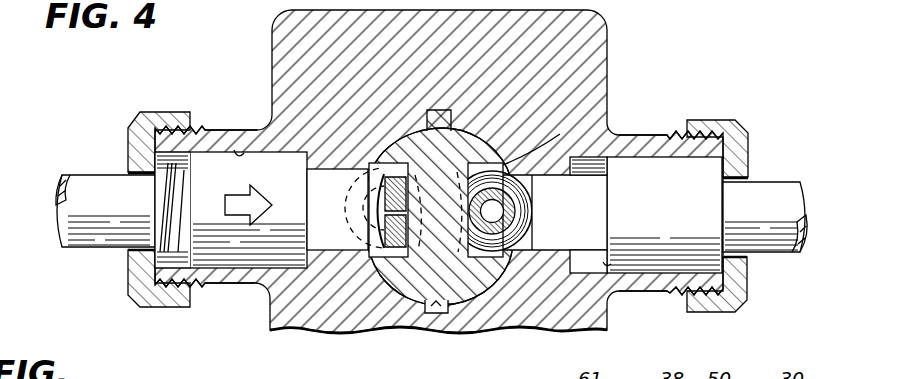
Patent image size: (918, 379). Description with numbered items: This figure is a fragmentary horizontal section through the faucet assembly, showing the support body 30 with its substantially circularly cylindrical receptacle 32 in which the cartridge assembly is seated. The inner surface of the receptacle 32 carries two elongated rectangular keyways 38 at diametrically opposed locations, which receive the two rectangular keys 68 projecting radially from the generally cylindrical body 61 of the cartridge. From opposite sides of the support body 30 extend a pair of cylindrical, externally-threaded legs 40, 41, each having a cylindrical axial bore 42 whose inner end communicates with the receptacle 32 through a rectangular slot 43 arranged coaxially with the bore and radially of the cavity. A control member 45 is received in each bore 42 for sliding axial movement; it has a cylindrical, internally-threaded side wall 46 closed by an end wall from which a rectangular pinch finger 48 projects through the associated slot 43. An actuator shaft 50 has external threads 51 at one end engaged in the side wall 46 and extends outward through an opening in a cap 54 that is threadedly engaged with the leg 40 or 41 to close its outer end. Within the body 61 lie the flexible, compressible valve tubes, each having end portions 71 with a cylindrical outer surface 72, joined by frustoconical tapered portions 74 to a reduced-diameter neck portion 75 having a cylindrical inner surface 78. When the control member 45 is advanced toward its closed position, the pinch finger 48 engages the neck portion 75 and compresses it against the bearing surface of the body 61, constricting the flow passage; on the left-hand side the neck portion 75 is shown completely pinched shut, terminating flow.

The support body 30 is at (610, 55).
The receptacle 32 is at (478, 277).
The keyways 38 is at (420, 298).
The leg 40 is at (652, 146).
The leg 41 is at (218, 138).
The bore 42 is at (243, 156).
The slot 43 is at (322, 252).
The control member 45 is at (215, 267).
The side wall 46 is at (247, 256).
The pinch finger 48 is at (347, 245).
The actuator shaft 50 is at (76, 234).
The external threads 51 is at (167, 195).
The cap 54 is at (136, 127).
The body 61 is at (410, 277).
The keys 68 is at (448, 316).
The end portions 71 is at (344, 186).
The cylindrical outer surface 72 is at (560, 134).
The tapered portions 74 is at (531, 212).
The neck portion 75 is at (384, 192).
The cylindrical inner surface 78 is at (514, 224).